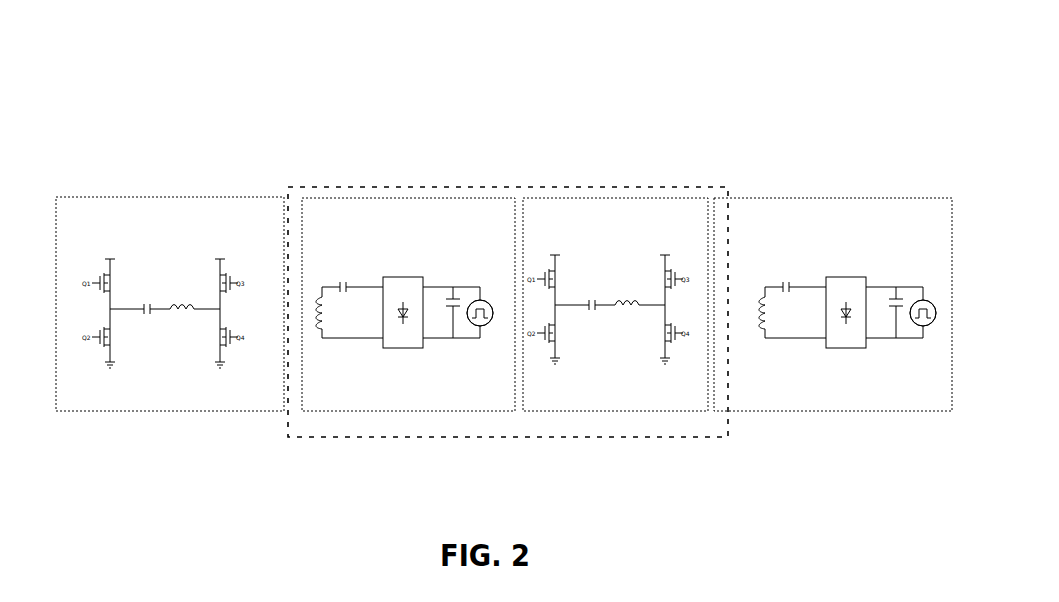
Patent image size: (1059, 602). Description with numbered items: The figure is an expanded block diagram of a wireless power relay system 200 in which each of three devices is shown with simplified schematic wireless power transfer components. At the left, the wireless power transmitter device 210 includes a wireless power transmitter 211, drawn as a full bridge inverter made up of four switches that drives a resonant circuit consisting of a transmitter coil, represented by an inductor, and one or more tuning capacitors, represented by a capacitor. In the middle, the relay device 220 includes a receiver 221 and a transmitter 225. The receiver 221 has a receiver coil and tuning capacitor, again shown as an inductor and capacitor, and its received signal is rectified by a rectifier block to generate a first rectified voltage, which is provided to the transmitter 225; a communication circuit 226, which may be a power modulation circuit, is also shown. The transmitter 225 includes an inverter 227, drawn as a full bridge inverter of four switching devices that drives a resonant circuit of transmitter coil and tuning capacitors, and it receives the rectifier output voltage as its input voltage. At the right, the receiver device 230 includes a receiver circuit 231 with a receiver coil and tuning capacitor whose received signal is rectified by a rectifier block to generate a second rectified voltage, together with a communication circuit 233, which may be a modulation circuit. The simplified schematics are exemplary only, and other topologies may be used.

The wireless power relay system 200 is at (346, 120).
The wireless power transmitter device 1 210 is at (117, 412).
The wireless power transmitter 211 is at (167, 252).
The relay Device 2 220 is at (590, 187).
The receiver 221 is at (375, 412).
The transmitter 225 is at (573, 412).
The communication circuit 226 is at (490, 301).
The inverter 227 is at (592, 252).
The receiver Device 3 230 is at (783, 412).
The receiver circuit 231 is at (838, 252).
The communication circuit 233 is at (928, 301).